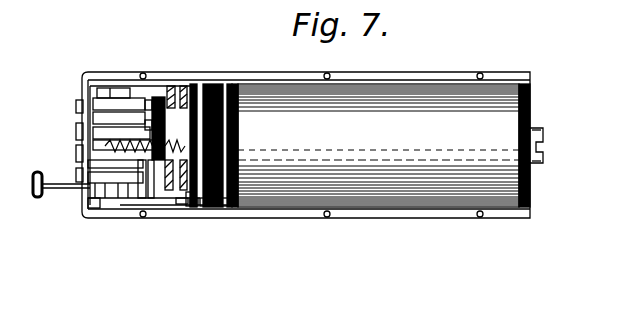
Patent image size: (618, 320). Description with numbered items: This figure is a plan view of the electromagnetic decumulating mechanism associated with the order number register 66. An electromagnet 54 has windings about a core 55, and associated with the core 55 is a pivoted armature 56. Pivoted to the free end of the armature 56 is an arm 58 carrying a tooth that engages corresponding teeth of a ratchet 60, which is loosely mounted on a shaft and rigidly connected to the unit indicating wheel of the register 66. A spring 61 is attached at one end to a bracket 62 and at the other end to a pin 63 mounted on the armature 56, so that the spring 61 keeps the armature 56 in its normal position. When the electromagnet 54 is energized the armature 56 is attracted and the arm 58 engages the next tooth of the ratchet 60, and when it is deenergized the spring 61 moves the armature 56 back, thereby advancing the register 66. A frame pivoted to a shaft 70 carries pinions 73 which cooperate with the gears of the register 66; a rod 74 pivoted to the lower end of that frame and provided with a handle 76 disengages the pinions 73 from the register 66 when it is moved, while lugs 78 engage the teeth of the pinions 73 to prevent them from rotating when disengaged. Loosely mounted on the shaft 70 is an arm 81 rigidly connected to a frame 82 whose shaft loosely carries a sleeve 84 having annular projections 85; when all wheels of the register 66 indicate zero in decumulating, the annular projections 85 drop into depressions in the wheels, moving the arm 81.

The electromagnet 54 is at (345, 178).
The core 55 is at (227, 208).
The armature 56 is at (210, 207).
The arm 58 is at (194, 204).
The ratchet 60 is at (118, 190).
The spring 61 is at (90, 132).
The bracket 62 is at (78, 150).
The pin 63 is at (213, 84).
The register 66 is at (82, 176).
The shaft 70 is at (182, 200).
The pinions 73 is at (152, 108).
The rod 74 is at (58, 189).
The handle 76 is at (33, 187).
The lugs 78 is at (189, 200).
The arm 81 is at (183, 110).
The frame 82 is at (170, 100).
The sleeve 84 is at (143, 177).
The annular projections 85 is at (153, 168).